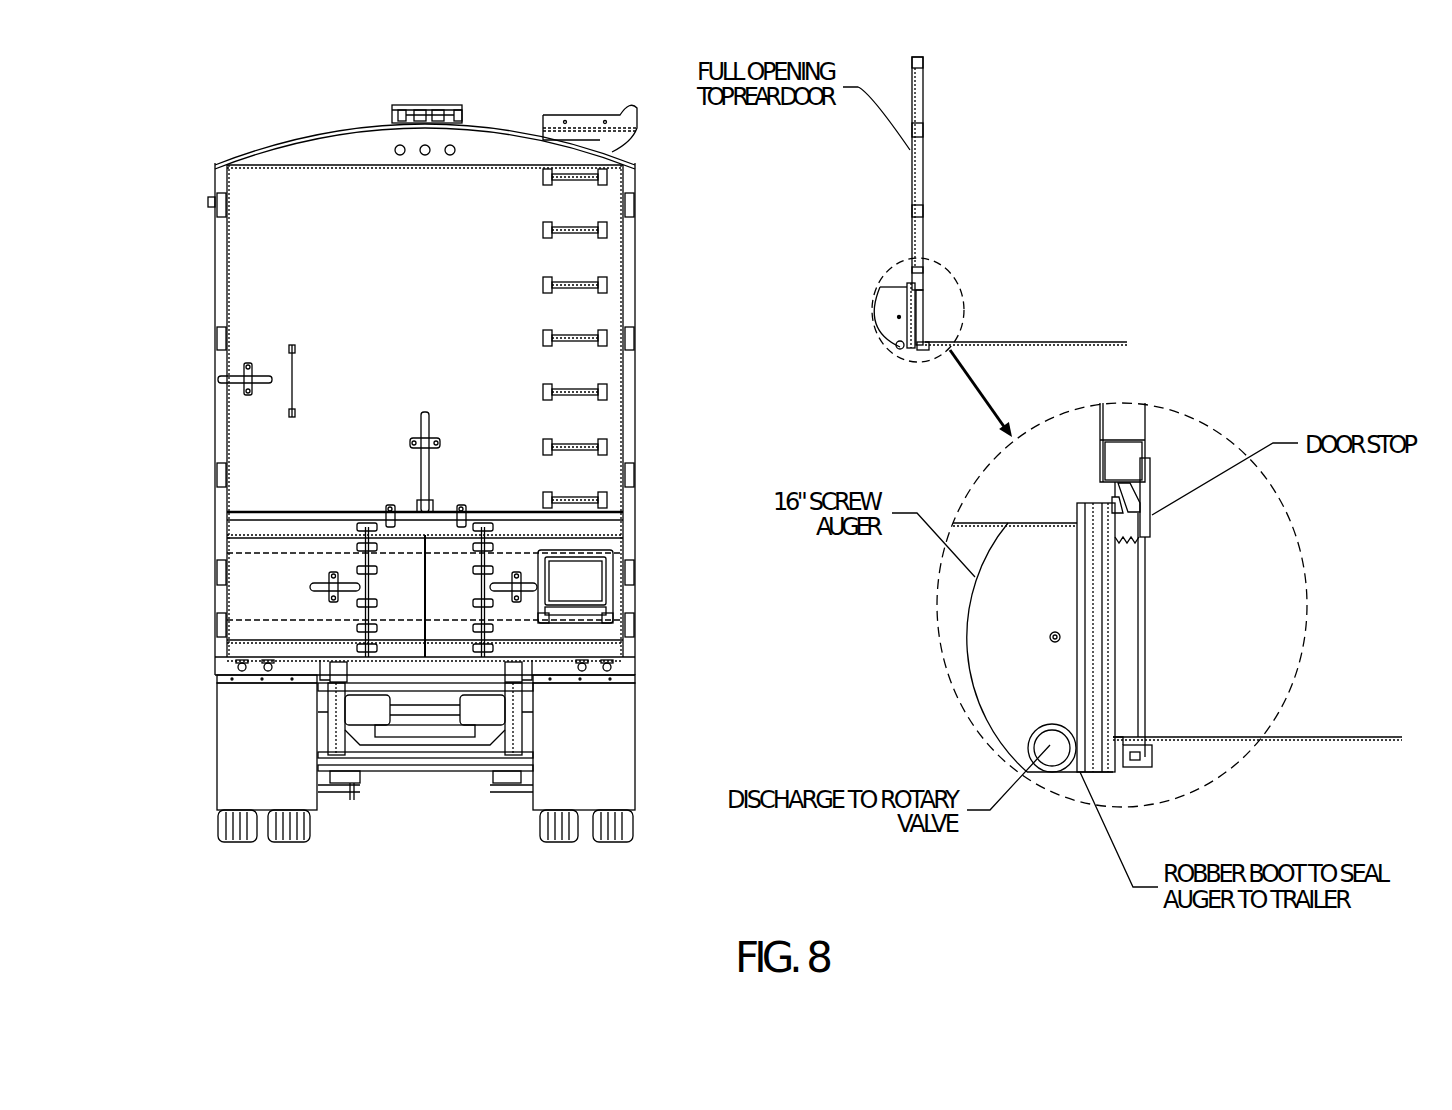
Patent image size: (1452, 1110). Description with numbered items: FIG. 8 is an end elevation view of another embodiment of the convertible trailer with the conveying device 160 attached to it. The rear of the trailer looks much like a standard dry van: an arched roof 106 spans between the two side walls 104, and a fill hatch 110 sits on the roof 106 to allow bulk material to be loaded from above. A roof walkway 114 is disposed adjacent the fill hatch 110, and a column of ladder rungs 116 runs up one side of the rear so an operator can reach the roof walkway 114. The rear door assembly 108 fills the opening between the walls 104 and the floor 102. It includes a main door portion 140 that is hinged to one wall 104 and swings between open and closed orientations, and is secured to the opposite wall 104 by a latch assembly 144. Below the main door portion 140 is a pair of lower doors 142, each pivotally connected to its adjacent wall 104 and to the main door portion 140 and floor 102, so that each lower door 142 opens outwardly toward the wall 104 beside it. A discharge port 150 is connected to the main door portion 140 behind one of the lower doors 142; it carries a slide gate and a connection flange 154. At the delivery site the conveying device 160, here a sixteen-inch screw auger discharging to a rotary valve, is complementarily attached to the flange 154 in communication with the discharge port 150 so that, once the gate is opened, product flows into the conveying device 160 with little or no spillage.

The floor 102 is at (1033, 333).
The wall 104 is at (215, 280).
The roof 106 is at (320, 132).
The door assembly 108 is at (186, 445).
The fill hatch 110 is at (425, 105).
The roof walkway 114 is at (585, 116).
The ladder rungs 116 is at (543, 225).
The main door portion 140 is at (433, 325).
The lower door 142 is at (247, 602).
The latch assembly 144 is at (204, 380).
The discharge port 150 is at (856, 304).
The connection flange 154 is at (1122, 512).
The conveying device 160 is at (1033, 712).